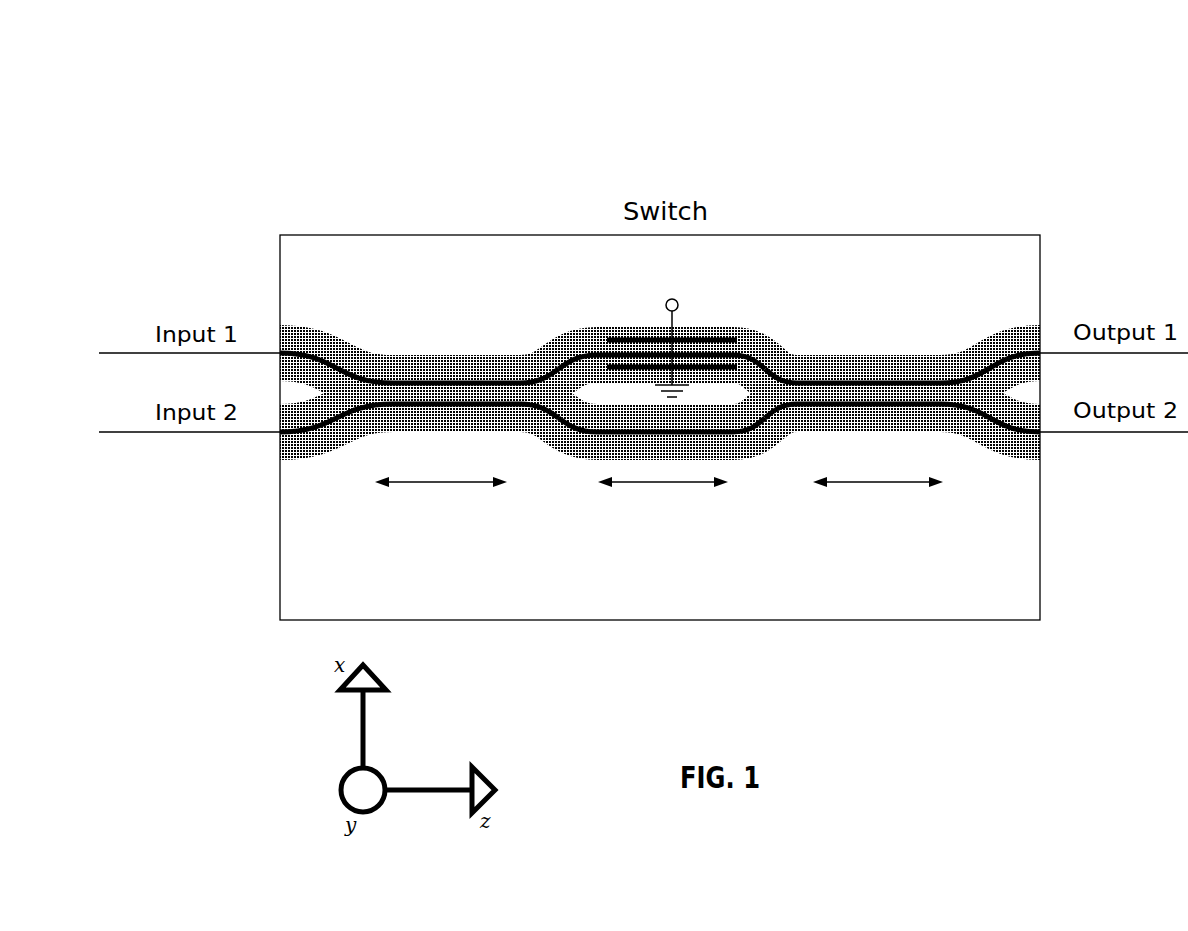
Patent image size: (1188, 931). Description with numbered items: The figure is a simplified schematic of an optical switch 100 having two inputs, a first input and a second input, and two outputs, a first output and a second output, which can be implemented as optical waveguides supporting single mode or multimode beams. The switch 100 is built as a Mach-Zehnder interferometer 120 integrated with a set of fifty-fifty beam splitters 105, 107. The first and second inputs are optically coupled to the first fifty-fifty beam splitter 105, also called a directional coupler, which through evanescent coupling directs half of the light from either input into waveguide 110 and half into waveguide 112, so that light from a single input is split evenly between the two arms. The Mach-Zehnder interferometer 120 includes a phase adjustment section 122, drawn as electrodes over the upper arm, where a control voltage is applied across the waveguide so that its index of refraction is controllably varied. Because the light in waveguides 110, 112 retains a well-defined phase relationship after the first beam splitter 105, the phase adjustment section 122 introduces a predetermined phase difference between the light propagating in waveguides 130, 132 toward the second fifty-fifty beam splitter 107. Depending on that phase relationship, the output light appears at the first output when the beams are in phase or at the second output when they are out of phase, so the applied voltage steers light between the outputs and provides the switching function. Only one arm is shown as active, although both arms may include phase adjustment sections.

The switch 100 is at (484, 97).
The first 50/50 beam splitter 105 is at (452, 326).
The second 50/50 beam splitter 107 is at (871, 318).
The waveguide 110 is at (563, 352).
The waveguide 112 is at (553, 425).
The Mach-Zehnder interferometer 120 is at (688, 602).
The phase adjustment section 122 is at (711, 300).
The waveguide 130 is at (767, 367).
The waveguide 132 is at (770, 413).